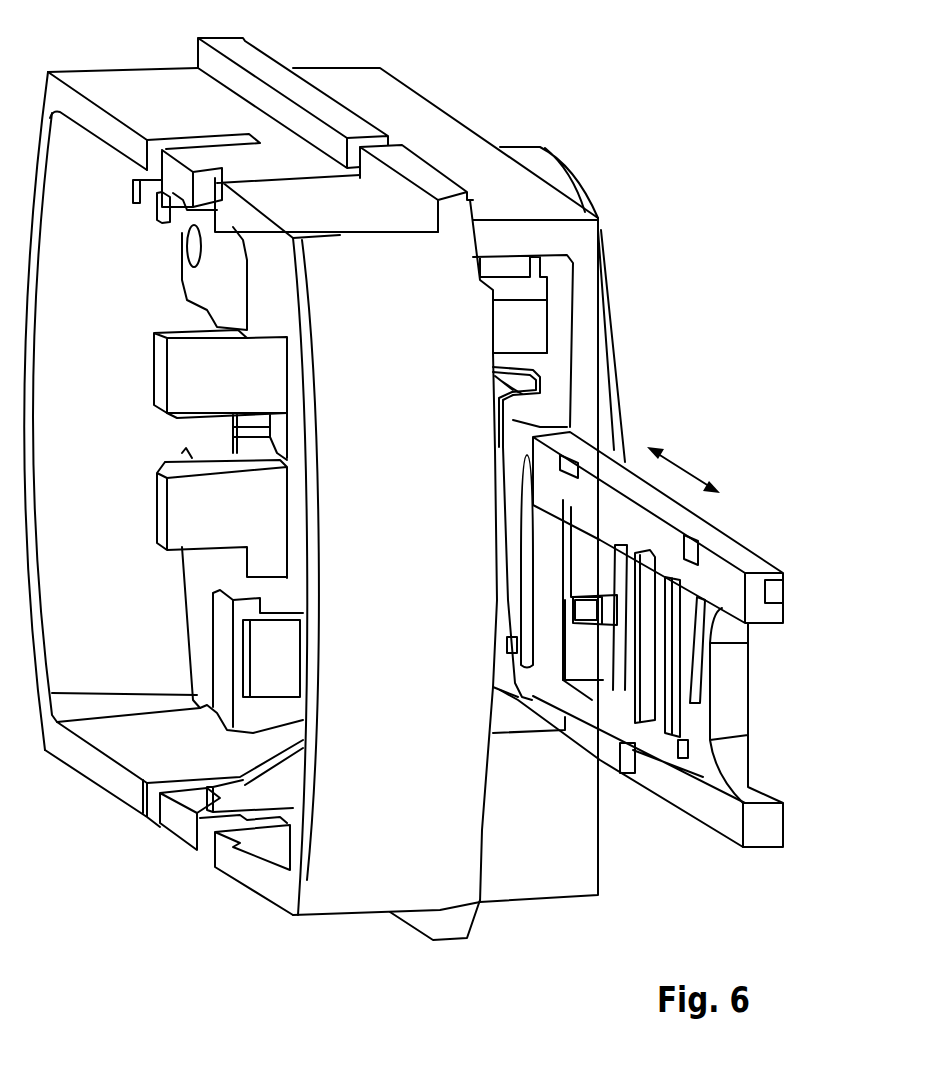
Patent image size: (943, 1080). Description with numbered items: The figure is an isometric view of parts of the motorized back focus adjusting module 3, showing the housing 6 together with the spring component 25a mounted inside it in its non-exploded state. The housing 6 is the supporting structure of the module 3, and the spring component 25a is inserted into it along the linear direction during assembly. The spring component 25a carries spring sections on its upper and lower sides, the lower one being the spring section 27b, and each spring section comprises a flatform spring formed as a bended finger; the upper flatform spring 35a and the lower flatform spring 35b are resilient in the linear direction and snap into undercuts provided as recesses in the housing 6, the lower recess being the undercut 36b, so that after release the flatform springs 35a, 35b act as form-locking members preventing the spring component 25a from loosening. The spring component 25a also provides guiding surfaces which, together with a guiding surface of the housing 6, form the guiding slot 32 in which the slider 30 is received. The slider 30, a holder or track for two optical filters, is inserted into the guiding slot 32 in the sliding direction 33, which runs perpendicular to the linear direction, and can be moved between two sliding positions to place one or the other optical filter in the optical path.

The housing 6 is at (116, 80).
The motorized back focus adjusting module 3 is at (580, 63).
The flatform spring 35a is at (490, 323).
The spring component 25a is at (537, 370).
The guiding slot 32 is at (507, 528).
The sliding direction 33 is at (688, 463).
The slider 30 is at (706, 529).
The undercut 36b is at (210, 704).
The flatform spring 35b is at (270, 680).
The spring section 27b is at (260, 787).